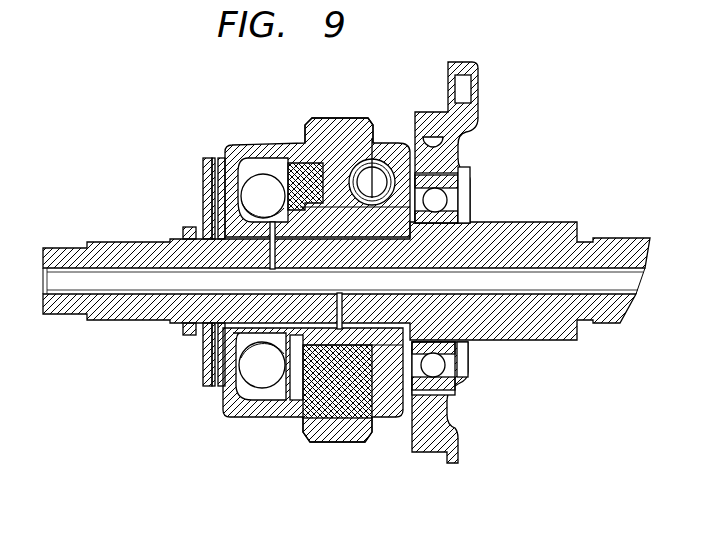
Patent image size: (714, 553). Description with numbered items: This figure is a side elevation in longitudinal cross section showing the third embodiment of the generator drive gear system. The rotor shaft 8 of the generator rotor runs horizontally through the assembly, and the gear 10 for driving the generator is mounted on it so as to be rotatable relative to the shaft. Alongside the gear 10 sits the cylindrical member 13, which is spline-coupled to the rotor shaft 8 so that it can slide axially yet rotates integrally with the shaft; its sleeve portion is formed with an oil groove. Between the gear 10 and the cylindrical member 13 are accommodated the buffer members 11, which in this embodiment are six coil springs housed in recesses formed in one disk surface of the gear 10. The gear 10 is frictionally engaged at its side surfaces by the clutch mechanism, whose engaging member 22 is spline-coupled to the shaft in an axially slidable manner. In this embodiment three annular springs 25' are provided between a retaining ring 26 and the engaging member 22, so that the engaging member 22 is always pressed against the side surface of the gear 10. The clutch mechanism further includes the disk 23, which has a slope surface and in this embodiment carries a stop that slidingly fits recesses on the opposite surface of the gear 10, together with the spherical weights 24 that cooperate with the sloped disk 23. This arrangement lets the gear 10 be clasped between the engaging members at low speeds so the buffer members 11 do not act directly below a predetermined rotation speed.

The rotor shaft 8 is at (542, 222).
The gear for driving the generator 10 is at (323, 125).
The buffer members 11 is at (378, 158).
The cylindrical member 13 is at (395, 150).
The engaging member 22 is at (242, 148).
The disk 23 is at (296, 160).
The spherical weights 24 is at (254, 186).
The annular springs 25' is at (204, 298).
The retaining ring 26 is at (184, 336).